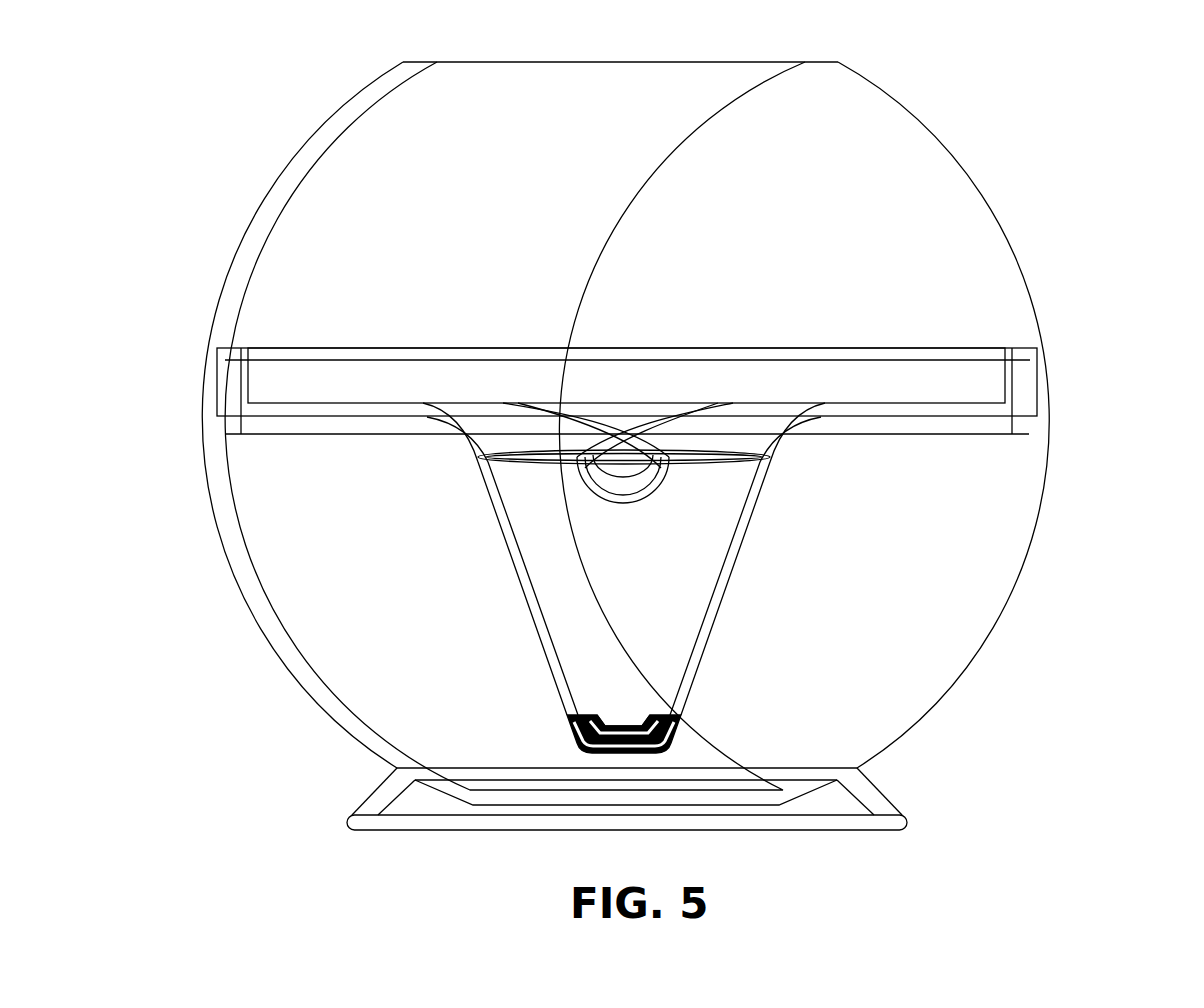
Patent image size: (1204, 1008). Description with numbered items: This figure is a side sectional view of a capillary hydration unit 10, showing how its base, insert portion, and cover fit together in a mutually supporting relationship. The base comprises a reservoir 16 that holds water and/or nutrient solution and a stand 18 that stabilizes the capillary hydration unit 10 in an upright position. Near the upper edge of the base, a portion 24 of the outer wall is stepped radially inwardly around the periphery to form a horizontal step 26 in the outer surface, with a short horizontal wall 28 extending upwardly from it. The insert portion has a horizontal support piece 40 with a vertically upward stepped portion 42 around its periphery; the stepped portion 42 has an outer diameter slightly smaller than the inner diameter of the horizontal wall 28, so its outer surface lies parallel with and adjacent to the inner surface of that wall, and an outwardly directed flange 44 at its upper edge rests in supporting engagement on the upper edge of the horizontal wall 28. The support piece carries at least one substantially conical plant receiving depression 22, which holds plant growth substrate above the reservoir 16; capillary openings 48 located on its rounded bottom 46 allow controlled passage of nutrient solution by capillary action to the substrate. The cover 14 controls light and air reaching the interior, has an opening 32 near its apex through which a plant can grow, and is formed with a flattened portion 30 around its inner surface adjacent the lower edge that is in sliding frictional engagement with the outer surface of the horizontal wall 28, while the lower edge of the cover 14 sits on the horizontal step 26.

The capillary hydration unit 10 is at (1197, 265).
The cover 14 is at (975, 185).
The reservoir 16 is at (920, 673).
The stand 18 is at (887, 790).
The plant receiving depression 22 is at (641, 569).
The portion of the outer wall of base 24 is at (233, 437).
The horizontal step 26 is at (210, 417).
The horizontal wall 28 is at (232, 387).
The flattened portion 30 is at (213, 328).
The opening 32 is at (717, 62).
The horizontal support piece 40 is at (407, 437).
The stepped portion 42 is at (252, 380).
The flange 44 is at (243, 350).
The rounded bottom 46 is at (673, 735).
The capillary openings 48 is at (598, 715).